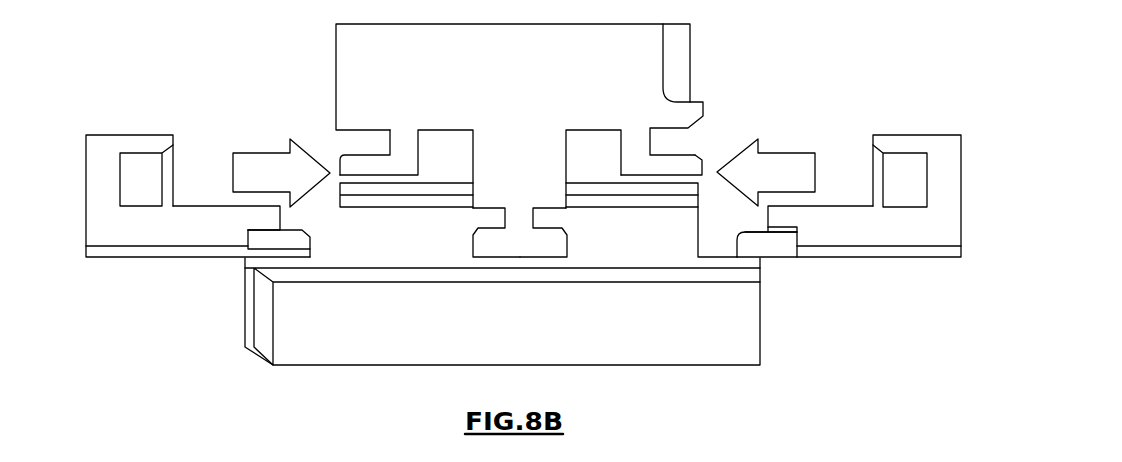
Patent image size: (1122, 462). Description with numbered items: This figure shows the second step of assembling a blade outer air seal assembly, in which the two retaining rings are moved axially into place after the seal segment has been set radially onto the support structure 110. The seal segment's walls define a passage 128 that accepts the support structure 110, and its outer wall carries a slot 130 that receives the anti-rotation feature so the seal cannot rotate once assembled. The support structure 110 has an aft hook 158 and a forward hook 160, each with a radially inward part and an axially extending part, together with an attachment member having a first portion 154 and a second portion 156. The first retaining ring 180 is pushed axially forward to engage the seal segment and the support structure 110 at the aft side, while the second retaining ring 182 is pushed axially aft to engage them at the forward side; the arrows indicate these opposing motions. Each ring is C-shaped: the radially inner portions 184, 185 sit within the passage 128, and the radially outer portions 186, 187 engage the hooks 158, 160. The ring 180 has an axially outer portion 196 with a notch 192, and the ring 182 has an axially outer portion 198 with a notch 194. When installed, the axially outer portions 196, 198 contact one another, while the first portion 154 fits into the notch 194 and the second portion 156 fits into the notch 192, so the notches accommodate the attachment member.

The support structure 110 is at (652, 62).
The passage 128 is at (665, 245).
The slot 130 is at (567, 196).
The first portion 154 is at (480, 243).
The second portion 156 is at (553, 243).
The aft hook 158 is at (685, 167).
The forward hook 160 is at (342, 157).
The first retaining ring 180 is at (947, 220).
The second retaining ring 182 is at (112, 220).
The radially inner portion 184 is at (860, 230).
The radially inner portion 185 is at (182, 235).
The radially outer portion 186 is at (897, 143).
The radially outer portion 187 is at (125, 142).
The notch 192 is at (763, 245).
The notch 194 is at (275, 241).
The axially outer portion 196 is at (737, 232).
The axially outer portion 198 is at (313, 243).